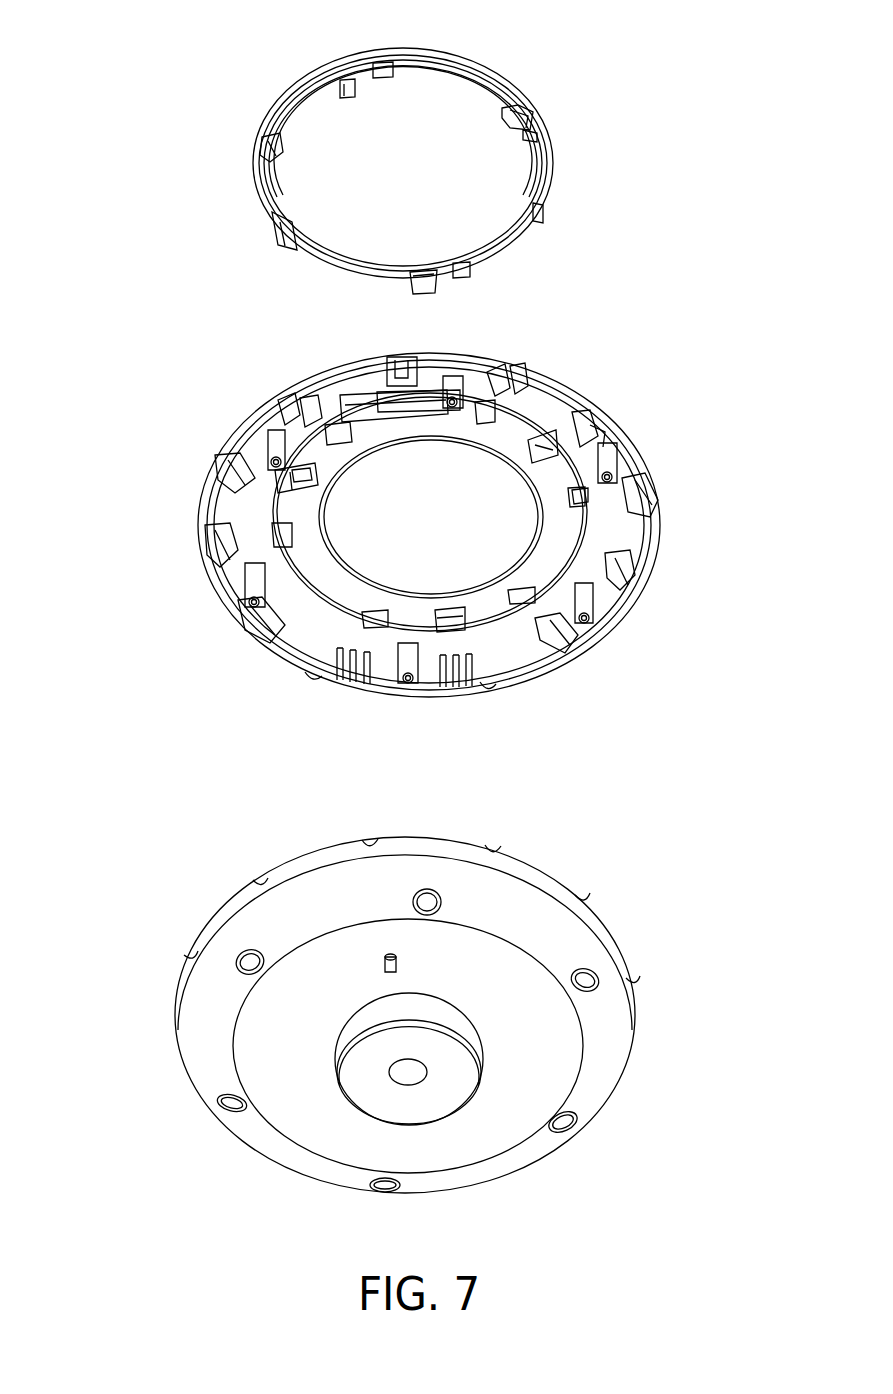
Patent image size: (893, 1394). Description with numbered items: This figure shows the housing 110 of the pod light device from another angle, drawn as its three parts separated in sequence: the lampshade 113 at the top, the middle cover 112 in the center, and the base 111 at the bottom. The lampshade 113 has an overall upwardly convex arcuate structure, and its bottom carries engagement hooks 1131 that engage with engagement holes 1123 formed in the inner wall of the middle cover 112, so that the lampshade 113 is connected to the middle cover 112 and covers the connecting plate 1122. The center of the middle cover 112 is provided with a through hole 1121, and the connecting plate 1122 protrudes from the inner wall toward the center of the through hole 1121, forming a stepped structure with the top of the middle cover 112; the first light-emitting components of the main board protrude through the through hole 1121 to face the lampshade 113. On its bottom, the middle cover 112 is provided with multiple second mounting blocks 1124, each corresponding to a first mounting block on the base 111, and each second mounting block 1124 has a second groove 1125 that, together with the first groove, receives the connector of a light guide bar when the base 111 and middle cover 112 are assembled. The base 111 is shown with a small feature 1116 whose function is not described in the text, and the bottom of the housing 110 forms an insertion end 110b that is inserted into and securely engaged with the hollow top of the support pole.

The housing 110 is at (98, 38).
The lampshade 113 is at (438, 176).
The engagement hooks 1131 is at (258, 148).
The middle cover 112 is at (409, 571).
The through hole 1121 is at (462, 500).
The connecting plate 1122 is at (548, 552).
The engagement holes 1123 is at (295, 474).
The second mounting blocks 1124 is at (313, 680).
The second groove 1125 is at (350, 682).
The base 111 is at (392, 1015).
The positioning peg 1116 is at (385, 957).
The insertion end 110b is at (458, 1068).